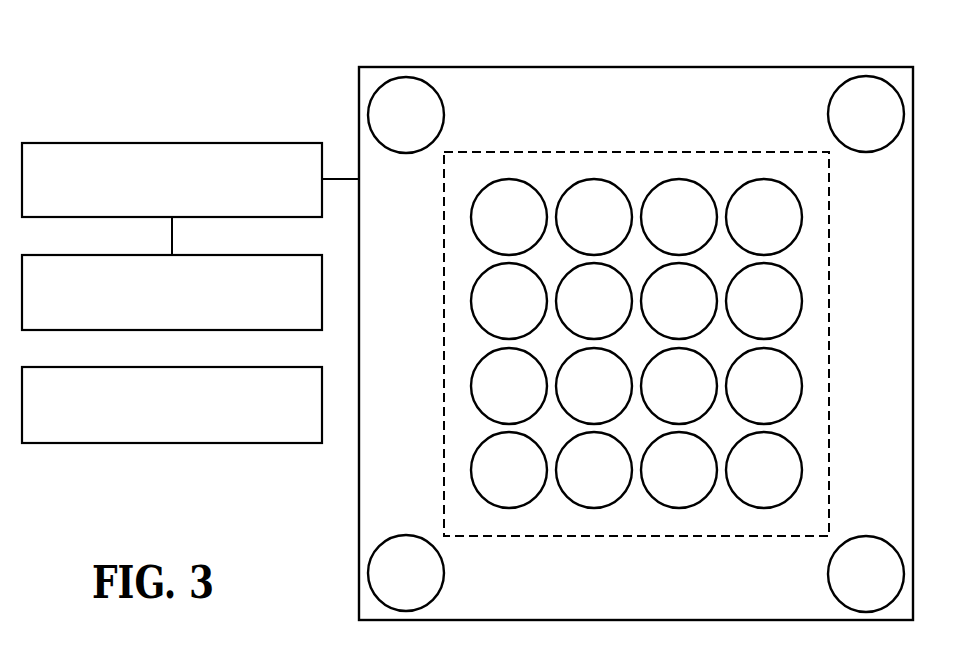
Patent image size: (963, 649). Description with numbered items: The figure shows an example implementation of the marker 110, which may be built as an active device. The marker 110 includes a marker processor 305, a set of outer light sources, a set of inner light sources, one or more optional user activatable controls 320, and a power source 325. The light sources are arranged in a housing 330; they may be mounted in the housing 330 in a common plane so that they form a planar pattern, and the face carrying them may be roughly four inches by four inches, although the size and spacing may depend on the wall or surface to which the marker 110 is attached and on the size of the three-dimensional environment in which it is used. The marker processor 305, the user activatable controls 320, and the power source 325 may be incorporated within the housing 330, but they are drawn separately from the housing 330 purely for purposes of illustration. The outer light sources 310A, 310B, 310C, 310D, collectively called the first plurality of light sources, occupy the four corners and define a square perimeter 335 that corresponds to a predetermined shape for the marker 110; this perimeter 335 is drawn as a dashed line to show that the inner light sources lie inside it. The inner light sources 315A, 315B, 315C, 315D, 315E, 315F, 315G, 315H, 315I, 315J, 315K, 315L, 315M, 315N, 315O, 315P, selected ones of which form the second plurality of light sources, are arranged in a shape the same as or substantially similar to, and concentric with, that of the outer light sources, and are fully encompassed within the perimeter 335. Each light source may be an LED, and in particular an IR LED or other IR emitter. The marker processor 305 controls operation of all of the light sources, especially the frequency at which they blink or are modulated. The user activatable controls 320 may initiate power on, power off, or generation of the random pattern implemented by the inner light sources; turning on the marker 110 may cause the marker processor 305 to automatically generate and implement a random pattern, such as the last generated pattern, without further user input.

The marker 110 is at (435, 40).
The marker processor 305 is at (189, 205).
The user activatable control(s) 320 is at (189, 318).
The power source 325 is at (189, 430).
The housing 330 is at (655, 101).
The perimeter 335 is at (829, 403).
The light source 310A is at (433, 126).
The light source 310B is at (893, 126).
The light source 310C is at (433, 584).
The light source 310D is at (893, 585).
The light source 315A is at (536, 228).
The light source 315B is at (621, 228).
The light source 315C is at (706, 228).
The light source 315D is at (791, 228).
The light source 315E is at (536, 312).
The light source 315F is at (621, 312).
The light source 315G is at (706, 312).
The light source 315H is at (791, 312).
The light source 315I is at (531, 397).
The light source 315J is at (618, 397).
The light source 315K is at (706, 397).
The light source 315L is at (789, 397).
The light source 315M is at (528, 466).
The light source 315N is at (622, 481).
The light source 315O is at (707, 481).
The light source 315P is at (789, 481).